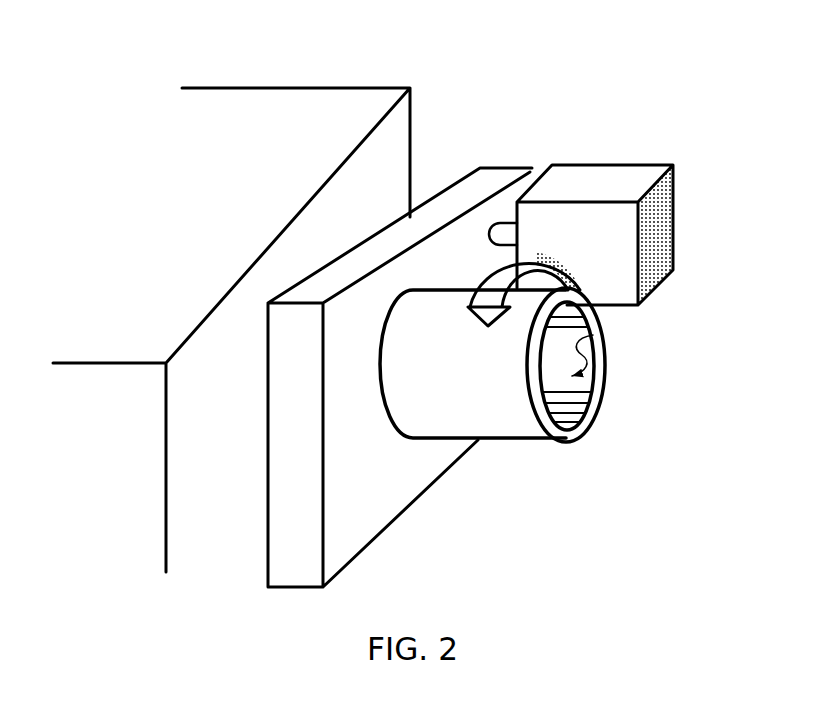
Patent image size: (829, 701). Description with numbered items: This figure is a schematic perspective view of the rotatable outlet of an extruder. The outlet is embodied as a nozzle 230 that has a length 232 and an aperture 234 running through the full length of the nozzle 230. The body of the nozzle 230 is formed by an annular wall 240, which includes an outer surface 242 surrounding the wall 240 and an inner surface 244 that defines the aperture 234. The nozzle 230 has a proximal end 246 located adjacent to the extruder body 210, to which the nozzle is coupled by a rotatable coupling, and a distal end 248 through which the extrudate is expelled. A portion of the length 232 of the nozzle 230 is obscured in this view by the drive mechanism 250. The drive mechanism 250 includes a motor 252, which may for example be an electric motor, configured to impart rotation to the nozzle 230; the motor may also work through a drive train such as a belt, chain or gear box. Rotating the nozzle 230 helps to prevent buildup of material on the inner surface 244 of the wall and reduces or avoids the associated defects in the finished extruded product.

The extruder body 210 is at (310, 117).
The nozzle 230 is at (643, 468).
The length 232 is at (355, 452).
The aperture 234 is at (603, 355).
The annular wall 240 is at (428, 313).
The outer surface 242 is at (502, 367).
The inner surface 244 is at (604, 334).
The proximal end 246 is at (362, 412).
The distal end 248 is at (590, 467).
The drive mechanism 250 is at (518, 150).
The motor 252 is at (617, 182).